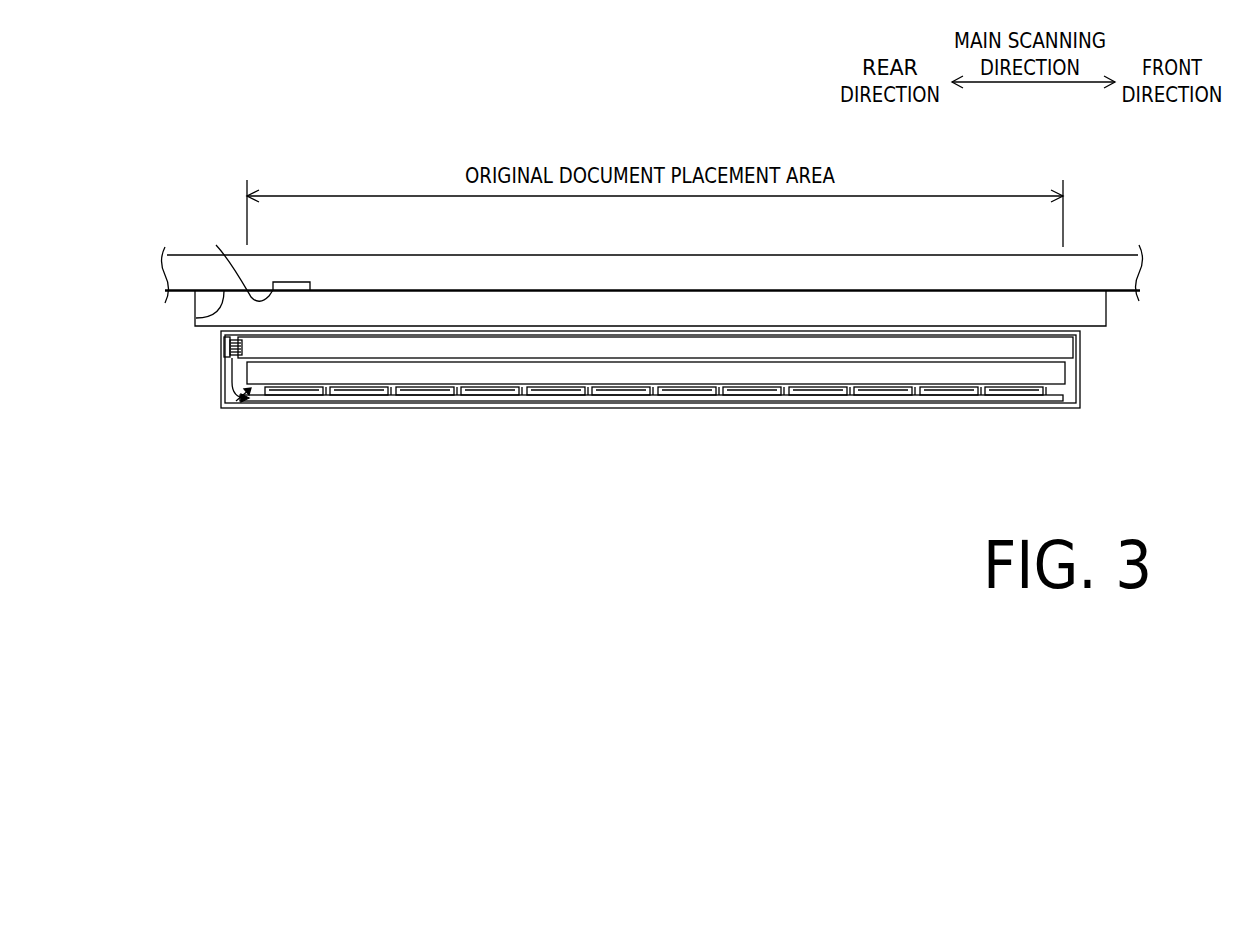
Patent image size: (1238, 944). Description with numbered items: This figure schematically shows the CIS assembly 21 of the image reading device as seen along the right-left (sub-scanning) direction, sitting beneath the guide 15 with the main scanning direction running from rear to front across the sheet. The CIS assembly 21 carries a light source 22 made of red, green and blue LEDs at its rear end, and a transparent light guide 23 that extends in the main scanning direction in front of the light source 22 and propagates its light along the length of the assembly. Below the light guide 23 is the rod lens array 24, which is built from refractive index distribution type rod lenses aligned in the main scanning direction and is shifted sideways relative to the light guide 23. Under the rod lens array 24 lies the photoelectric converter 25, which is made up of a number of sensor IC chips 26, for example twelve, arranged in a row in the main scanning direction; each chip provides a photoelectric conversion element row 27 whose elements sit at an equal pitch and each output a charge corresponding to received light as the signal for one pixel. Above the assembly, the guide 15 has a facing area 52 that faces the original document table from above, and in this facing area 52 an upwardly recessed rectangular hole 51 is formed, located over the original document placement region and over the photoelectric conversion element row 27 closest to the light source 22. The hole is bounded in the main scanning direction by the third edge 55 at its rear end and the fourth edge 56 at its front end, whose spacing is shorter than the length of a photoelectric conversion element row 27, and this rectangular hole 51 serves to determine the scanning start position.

The guide 15 is at (1095, 263).
The rectangular hole 51 is at (293, 292).
The facing area 52 is at (195, 321).
The third edge 55 is at (238, 260).
The fourth edge 56 is at (314, 295).
The CIS assembly 21 is at (1081, 370).
The light source 22 is at (222, 346).
The light guide 23 is at (1050, 352).
The rod lens array 24 is at (983, 375).
The photoelectric converter 25 is at (222, 407).
The sensor IC chip 26 is at (268, 401).
The photoelectric conversion element row 27 is at (303, 401).